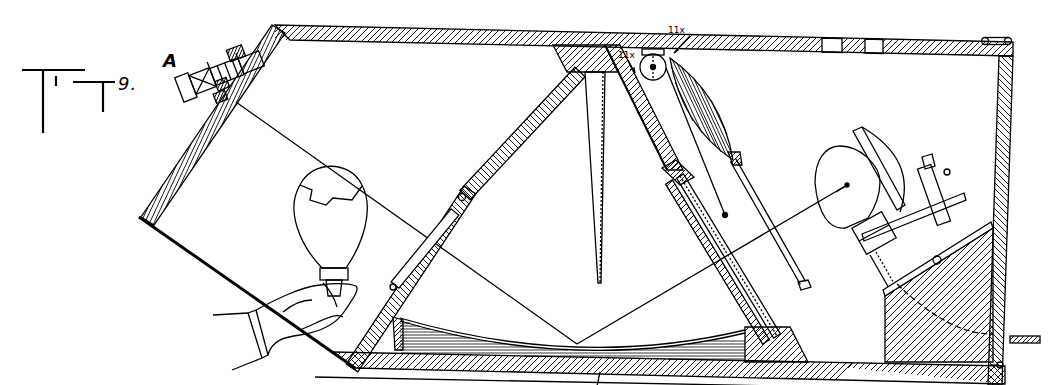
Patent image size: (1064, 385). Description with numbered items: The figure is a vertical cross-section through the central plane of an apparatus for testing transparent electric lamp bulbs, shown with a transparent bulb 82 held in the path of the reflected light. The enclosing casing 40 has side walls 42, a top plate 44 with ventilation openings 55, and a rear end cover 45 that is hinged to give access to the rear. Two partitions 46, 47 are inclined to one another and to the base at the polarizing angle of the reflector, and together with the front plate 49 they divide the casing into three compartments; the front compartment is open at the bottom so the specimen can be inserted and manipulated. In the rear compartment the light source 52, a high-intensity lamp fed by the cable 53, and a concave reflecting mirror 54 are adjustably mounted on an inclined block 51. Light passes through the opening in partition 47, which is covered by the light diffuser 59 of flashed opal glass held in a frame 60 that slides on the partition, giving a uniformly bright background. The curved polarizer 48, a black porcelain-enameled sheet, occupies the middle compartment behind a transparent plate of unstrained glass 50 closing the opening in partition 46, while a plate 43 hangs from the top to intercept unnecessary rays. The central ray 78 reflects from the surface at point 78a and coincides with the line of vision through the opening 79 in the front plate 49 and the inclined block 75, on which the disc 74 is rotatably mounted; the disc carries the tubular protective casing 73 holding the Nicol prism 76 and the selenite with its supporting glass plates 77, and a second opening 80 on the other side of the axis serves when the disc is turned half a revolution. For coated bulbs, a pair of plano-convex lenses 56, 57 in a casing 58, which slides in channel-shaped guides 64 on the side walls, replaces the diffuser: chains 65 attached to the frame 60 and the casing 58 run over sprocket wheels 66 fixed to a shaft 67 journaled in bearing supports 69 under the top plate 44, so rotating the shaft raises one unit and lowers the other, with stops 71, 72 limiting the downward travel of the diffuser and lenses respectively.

The enclosing casing 40 is at (194, 256).
The side wall 42 is at (570, 125).
The plate 43 is at (598, 226).
The top plate 44 is at (511, 37).
The rear end cover 45 is at (1005, 196).
The partition 46 is at (509, 159).
The partition 47 is at (656, 156).
The curved polarizer 48 is at (496, 343).
The front plate 49 is at (162, 178).
The transparent plate of unstrained glass 50 is at (420, 249).
The inclined block 51 is at (978, 288).
The light source 52 is at (838, 137).
The cable 53 is at (1026, 337).
The concave reflecting mirror 54 is at (868, 156).
The ventilation openings 55 is at (837, 40).
The plano-convex lens 56 is at (682, 134).
The plano-convex lens 57 is at (726, 122).
The casing 58 is at (740, 158).
The light diffuser 59 is at (718, 250).
The frame 60 is at (686, 198).
The channel-shaped guides 64 is at (758, 197).
The chains 65 is at (652, 84).
The sprocket wheels 66 is at (641, 44).
The shaft 67 is at (638, 96).
The bearing supports 69 is at (690, 46).
The stop 71 is at (798, 339).
The stop 72 is at (805, 289).
The tubular protective casing 73 is at (190, 86).
The disc 74 is at (238, 42).
The inclined block 75 is at (210, 110).
The Nicol prism 76 is at (213, 70).
The supporting glass plates 77 is at (236, 100).
The central ray 78 is at (324, 160).
The point 78a is at (578, 343).
The opening 79 is at (232, 112).
The opening 80 is at (258, 68).
The transparent bulb 82 is at (316, 227).